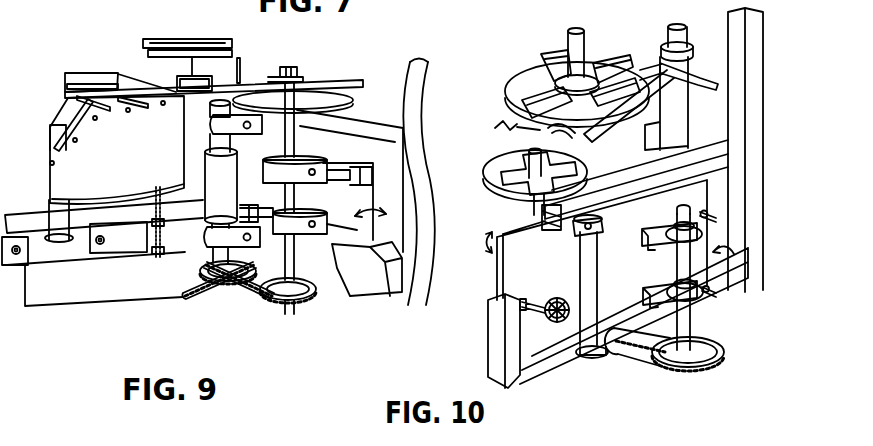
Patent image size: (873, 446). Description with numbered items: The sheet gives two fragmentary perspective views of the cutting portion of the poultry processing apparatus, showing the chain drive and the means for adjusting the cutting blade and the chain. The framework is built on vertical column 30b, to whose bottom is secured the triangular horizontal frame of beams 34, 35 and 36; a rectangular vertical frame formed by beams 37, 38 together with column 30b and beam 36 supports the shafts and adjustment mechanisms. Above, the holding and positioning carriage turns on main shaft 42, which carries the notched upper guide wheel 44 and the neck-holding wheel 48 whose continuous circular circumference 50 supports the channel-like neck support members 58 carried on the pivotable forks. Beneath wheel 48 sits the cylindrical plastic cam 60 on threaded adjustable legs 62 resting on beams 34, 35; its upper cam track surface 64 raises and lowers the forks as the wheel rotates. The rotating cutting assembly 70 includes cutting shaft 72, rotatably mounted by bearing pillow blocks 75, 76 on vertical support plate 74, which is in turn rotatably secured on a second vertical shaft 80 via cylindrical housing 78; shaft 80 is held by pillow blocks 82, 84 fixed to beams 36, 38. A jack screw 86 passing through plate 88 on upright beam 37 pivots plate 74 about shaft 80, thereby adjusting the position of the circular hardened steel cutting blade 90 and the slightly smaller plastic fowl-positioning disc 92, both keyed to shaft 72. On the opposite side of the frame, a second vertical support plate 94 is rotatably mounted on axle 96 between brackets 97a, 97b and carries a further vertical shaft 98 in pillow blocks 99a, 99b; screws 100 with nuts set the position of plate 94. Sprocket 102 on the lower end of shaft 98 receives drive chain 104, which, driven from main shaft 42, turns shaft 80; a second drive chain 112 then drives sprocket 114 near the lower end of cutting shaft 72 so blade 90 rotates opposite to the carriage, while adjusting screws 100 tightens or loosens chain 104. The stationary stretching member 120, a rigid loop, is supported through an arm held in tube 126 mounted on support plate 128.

In FIG. 10, the vertical column 30b is at (757, 73).
In FIG. 9, the frame beam 34 is at (78, 296).
In FIG. 9, the frame beam 35 is at (140, 242).
In FIG. 9, the frame beam 36 is at (336, 292).
In FIG. 10, the frame beam 36 is at (752, 265).
In FIG. 9, the upright beam 37 is at (392, 204).
In FIG. 10, the upright beam 37 is at (497, 330).
In FIG. 9, the beam 38 is at (343, 127).
In FIG. 10, the beam 38 is at (730, 163).
In FIG. 9, the main shaft 42 is at (50, 133).
In FIG. 10, the upper guide wheel 44 is at (527, 77).
In FIG. 9, the neck-holding wheel 48 is at (76, 74).
In FIG. 10, the neck-holding wheel 48 is at (513, 100).
In FIG. 9, the circular circumference 50 is at (98, 72).
In FIG. 9, the neck support member 58 is at (177, 80).
In FIG. 9, the cam 60 is at (99, 177).
In FIG. 9, the adjustable legs 62 is at (162, 238).
In FIG. 9, the cam track surface 64 is at (74, 119).
In FIG. 9, the rotating cutting blade assembly 70 is at (333, 75).
In FIG. 10, the rotating cutting blade assembly 70 is at (503, 214).
In FIG. 9, the cutting shaft 72 is at (291, 143).
In FIG. 10, the cutting shaft 72 is at (542, 217).
In FIG. 9, the vertical support plate 74 is at (344, 203).
In FIG. 10, the vertical support plate 74 is at (510, 262).
In FIG. 9, the bearing pillow block 75 is at (347, 163).
In FIG. 9, the bearing pillow block 76 is at (293, 228).
In FIG. 9, the cylindrical housing 78 is at (233, 184).
In FIG. 9, the second vertical shaft 80 is at (204, 138).
In FIG. 9, the bearing pillow block 82 is at (208, 126).
In FIG. 9, the bearing pillow block 84 is at (187, 253).
In FIG. 10, the jack screw 86 is at (550, 322).
In FIG. 10, the plate 88 is at (570, 291).
In FIG. 9, the cutting blade 90 is at (258, 82).
In FIG. 10, the cutting blade 90 is at (508, 173).
In FIG. 9, the fowl-positioning disc 92 is at (323, 97).
In FIG. 10, the fowl-positioning disc 92 is at (512, 192).
In FIG. 10, the second vertical support plate 94 is at (668, 271).
In FIG. 10, the axle 96 is at (598, 277).
In FIG. 10, the bracket 97a is at (598, 231).
In FIG. 10, the bracket 97b is at (598, 359).
In FIG. 10, the vertical shaft 98 is at (691, 323).
In FIG. 10, the bearing pillow block 99a is at (700, 235).
In FIG. 10, the bearing pillow block 99b is at (742, 286).
In FIG. 10, the screws 100 is at (707, 213).
In FIG. 10, the sprocket 102 is at (707, 368).
In FIG. 9, the drive chain 104 is at (207, 294).
In FIG. 10, the drive chain 104 is at (638, 364).
In FIG. 9, the second drive chain 112 is at (262, 299).
In FIG. 9, the sprocket 114 is at (310, 302).
In FIG. 9, the stretching member 120 is at (190, 48).
In FIG. 10, the stretching member 120 is at (600, 143).
In FIG. 10, the tube 126 is at (690, 60).
In FIG. 10, the support plate 128 is at (650, 60).